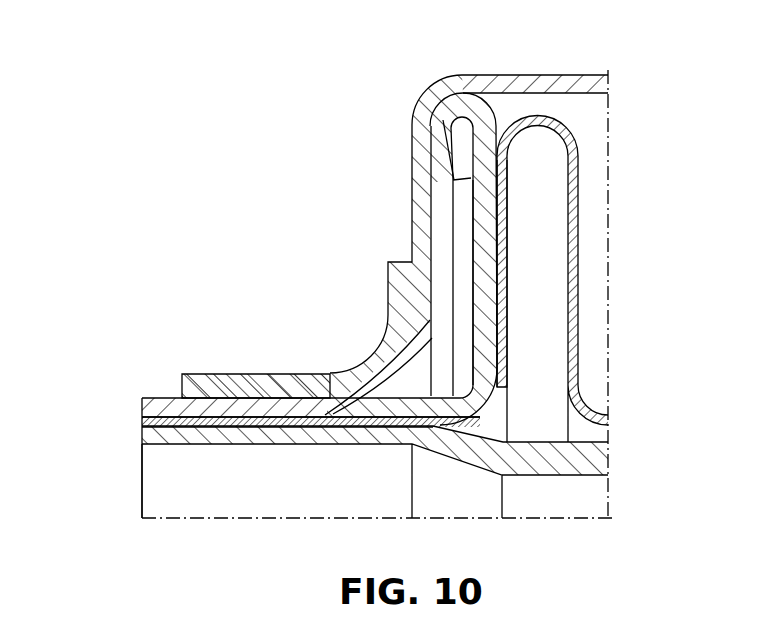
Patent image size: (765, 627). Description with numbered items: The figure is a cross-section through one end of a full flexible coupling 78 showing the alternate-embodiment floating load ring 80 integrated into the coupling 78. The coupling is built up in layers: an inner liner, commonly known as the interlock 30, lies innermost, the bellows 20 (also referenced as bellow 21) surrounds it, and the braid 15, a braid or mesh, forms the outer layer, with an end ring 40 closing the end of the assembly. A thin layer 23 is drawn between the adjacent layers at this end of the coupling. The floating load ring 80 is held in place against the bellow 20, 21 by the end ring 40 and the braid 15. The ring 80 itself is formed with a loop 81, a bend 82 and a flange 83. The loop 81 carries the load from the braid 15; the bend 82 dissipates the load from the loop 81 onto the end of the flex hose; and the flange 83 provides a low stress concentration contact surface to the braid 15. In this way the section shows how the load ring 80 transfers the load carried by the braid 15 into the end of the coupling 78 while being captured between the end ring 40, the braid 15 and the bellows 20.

The braid 15 is at (594, 78).
The bellows 20 is at (543, 116).
The bellow 21 is at (508, 287).
The thin layer / liner 23 is at (363, 422).
The interlock 30 is at (147, 434).
The end ring 40 is at (242, 385).
The flex coupling 78 is at (436, 73).
The floating load ring 80 is at (446, 237).
The loop 81 is at (432, 121).
The bend 82 is at (487, 402).
The flange 83 is at (355, 385).